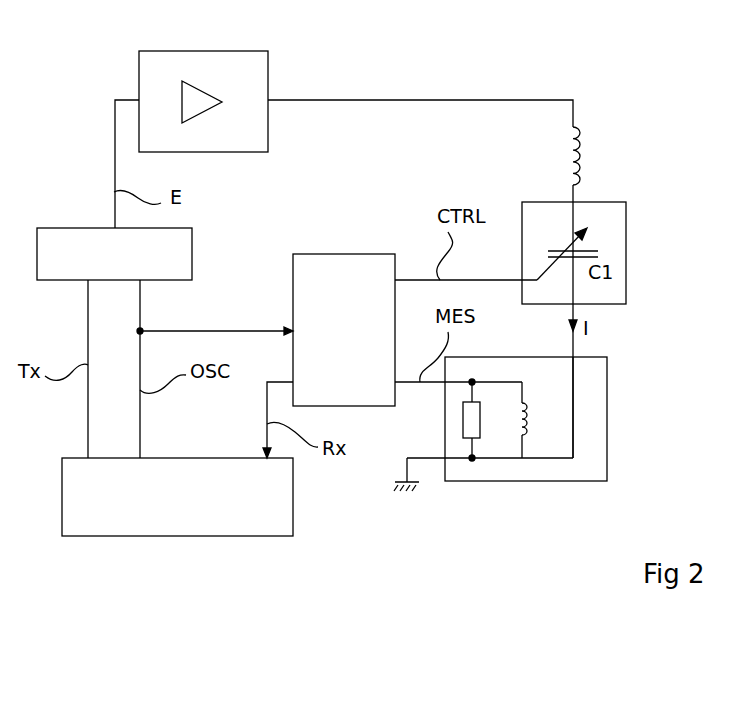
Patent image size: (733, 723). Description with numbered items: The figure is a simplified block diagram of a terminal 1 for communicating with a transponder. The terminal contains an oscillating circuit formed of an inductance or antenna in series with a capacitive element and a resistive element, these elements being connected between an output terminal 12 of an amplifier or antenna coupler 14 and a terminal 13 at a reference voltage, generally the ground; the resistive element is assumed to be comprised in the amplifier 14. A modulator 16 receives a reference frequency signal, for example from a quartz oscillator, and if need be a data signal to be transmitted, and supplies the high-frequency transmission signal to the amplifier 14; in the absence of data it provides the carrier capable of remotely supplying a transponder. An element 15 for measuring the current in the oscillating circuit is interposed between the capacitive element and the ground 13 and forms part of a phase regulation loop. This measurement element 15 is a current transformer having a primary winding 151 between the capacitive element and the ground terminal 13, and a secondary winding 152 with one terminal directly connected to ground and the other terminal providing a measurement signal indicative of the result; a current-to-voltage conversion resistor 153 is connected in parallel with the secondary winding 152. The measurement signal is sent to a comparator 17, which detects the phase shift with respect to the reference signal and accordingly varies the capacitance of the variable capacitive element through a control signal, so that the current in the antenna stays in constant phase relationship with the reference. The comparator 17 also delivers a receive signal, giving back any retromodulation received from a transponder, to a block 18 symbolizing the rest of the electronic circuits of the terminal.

The terminal 1 is at (225, 636).
The output terminal 12 is at (310, 100).
The terminal at a reference voltage 13 is at (405, 470).
The amplifier or antenna coupler 14 is at (178, 51).
The element for measuring the current 15 is at (537, 419).
The primary winding 151 is at (572, 403).
The secondary winding 152 is at (530, 413).
The current-to-voltage conversion resistor 153 is at (481, 425).
The modulator 16 is at (192, 253).
The comparator 17 is at (340, 254).
The block symbolizing the rest of the electronic circuits 18 is at (155, 537).